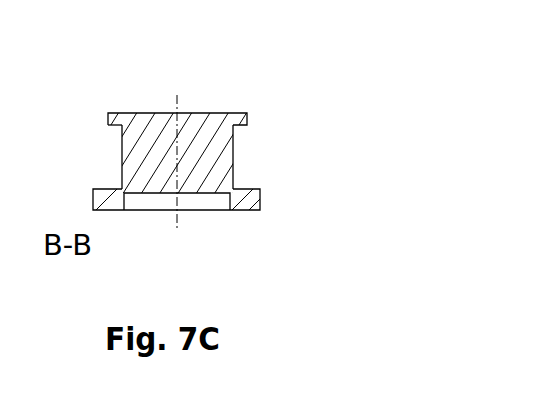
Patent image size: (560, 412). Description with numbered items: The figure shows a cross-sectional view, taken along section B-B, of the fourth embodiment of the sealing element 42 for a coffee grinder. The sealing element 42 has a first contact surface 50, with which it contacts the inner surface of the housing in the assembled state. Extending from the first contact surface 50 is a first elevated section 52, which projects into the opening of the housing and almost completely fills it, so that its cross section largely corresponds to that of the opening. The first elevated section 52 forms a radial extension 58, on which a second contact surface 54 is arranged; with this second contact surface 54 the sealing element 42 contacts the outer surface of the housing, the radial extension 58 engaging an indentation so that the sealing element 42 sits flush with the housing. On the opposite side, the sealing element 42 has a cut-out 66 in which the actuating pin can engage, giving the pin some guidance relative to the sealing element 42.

The sealing element 42 is at (267, 81).
The radial extension 58 is at (240, 112).
The second contact surface 54 is at (110, 128).
The first elevated section 52 is at (132, 147).
The first contact surface 50 is at (247, 189).
The cut-out 66 is at (205, 200).